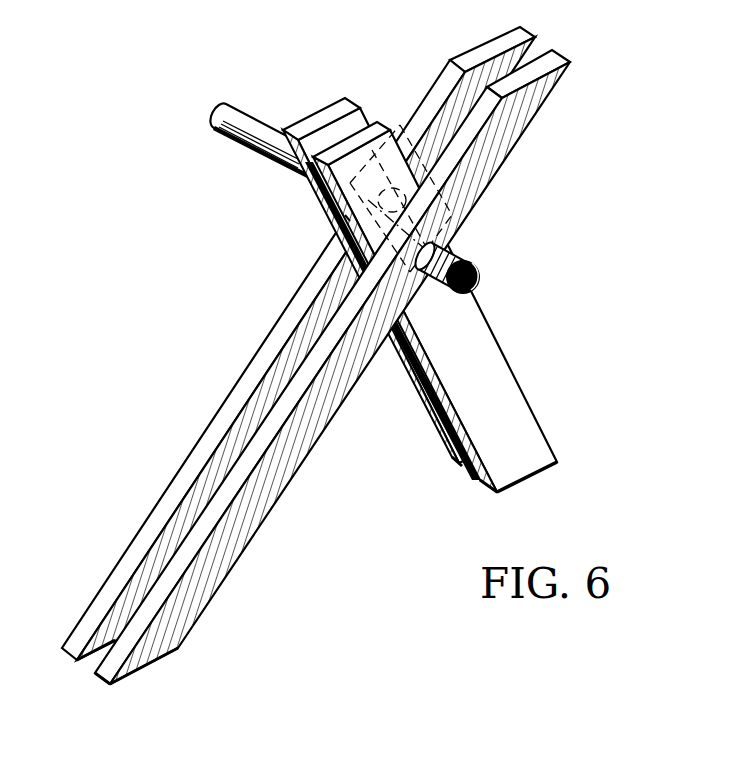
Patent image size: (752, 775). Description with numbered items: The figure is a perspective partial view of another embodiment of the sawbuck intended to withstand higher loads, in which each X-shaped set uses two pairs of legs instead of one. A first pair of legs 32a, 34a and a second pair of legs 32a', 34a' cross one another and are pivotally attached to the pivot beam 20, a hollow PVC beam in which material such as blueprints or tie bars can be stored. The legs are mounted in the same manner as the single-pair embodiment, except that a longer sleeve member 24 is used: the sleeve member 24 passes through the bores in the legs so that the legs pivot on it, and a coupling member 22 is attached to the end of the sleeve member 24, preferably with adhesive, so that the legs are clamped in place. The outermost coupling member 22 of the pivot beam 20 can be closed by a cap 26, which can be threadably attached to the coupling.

The pivot beam 20 is at (250, 170).
The coupling member 22 is at (445, 212).
The sleeve member 24 is at (347, 218).
The cap 26 is at (482, 268).
The first leg 32a is at (370, 344).
The first leg 32a' is at (298, 331).
The second leg 34a is at (482, 307).
The second leg 34a' is at (402, 283).